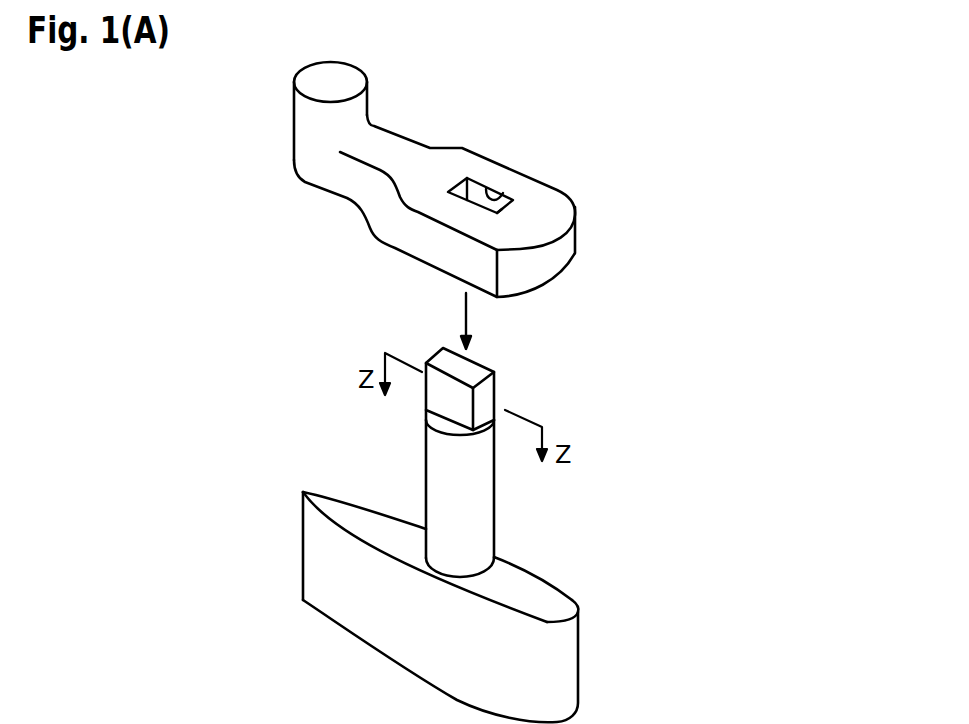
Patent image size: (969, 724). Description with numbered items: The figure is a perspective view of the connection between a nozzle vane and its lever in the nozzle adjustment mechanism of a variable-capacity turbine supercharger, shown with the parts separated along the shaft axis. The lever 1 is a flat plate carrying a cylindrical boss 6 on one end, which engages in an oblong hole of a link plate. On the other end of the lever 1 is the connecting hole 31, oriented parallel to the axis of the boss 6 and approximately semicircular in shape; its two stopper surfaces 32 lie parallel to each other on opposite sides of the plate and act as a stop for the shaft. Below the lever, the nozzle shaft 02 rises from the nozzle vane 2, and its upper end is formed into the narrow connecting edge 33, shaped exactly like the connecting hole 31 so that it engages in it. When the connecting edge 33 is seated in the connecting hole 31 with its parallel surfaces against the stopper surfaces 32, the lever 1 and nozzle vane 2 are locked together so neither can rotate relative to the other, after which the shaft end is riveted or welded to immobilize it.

The boss 6 is at (302, 117).
The lever 1 is at (547, 200).
The connecting hole 31 is at (497, 212).
The stopper surface 32 is at (502, 193).
The connecting edge 33 is at (462, 402).
The nozzle shaft 02 is at (482, 525).
The nozzle vane 2 is at (558, 668).